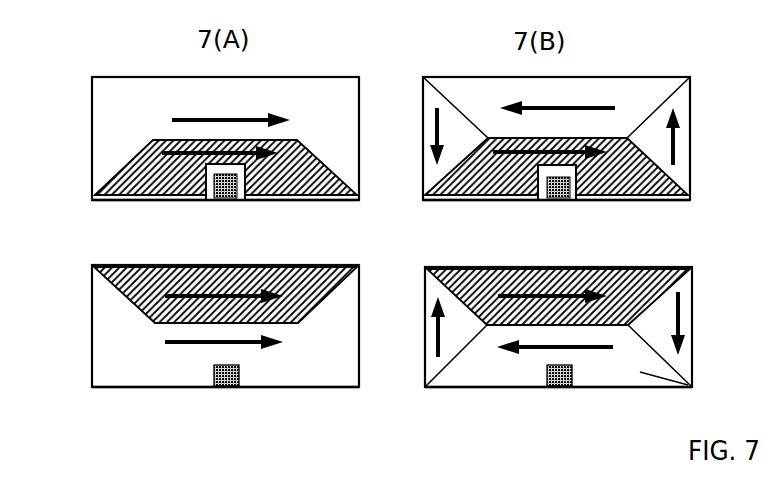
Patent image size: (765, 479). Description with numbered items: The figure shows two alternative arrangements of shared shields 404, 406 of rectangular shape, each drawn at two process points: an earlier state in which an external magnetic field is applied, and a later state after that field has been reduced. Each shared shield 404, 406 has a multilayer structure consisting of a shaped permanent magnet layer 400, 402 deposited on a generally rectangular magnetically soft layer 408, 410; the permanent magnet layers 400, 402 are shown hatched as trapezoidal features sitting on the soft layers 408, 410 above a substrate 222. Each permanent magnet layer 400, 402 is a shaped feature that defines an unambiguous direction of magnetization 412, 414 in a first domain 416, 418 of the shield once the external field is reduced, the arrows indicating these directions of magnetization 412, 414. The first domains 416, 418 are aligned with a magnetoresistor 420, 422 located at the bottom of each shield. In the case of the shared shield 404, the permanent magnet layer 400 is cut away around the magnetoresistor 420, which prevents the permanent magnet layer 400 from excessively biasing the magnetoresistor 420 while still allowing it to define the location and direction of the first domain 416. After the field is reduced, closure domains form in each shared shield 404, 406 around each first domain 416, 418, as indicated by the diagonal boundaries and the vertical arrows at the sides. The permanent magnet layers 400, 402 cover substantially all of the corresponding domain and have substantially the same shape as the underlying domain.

The substrate 222 is at (463, 200).
The shaped permanent magnet layer 400 is at (147, 176).
The shaped permanent magnet layer 402 is at (140, 298).
The shared shield 404 is at (193, 111).
The shared shield 406 is at (189, 301).
The magnetically soft layer 408 is at (120, 120).
The magnetically soft layer 410 is at (122, 345).
The direction of magnetization 412 is at (508, 150).
The direction of magnetization 414 is at (510, 352).
The first domain 416 is at (562, 168).
The first domain 418 is at (633, 365).
The magnetoresistor 420 is at (226, 200).
The magnetoresistor 422 is at (226, 388).